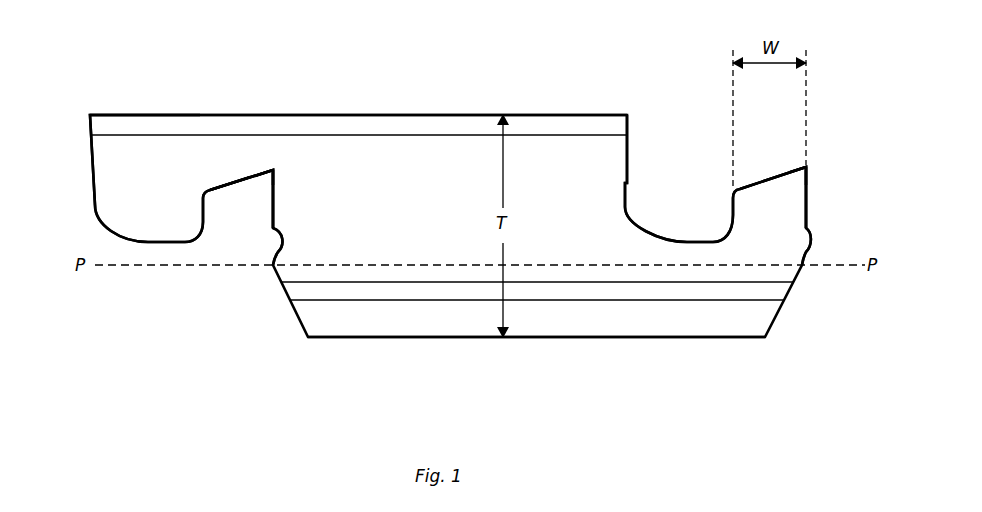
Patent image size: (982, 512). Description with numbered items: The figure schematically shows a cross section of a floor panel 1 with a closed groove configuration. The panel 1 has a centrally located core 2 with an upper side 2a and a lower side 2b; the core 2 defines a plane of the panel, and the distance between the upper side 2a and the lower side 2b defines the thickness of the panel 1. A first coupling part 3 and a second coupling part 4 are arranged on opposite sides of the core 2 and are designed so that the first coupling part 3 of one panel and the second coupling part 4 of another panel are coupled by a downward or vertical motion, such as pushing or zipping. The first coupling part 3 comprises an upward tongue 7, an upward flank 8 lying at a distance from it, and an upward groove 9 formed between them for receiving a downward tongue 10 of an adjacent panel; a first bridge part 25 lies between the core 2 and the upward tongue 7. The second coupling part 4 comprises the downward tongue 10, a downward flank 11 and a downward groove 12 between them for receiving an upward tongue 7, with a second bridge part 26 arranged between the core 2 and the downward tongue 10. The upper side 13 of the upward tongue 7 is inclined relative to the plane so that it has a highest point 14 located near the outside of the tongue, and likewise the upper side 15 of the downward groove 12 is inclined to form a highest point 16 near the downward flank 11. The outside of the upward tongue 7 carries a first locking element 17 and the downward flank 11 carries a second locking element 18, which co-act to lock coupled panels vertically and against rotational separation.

The floor panel 1 is at (450, 98).
The core 2 is at (358, 179).
The upper side 2a is at (156, 115).
The lower side 2b is at (622, 337).
The first coupling part 3 is at (820, 148).
The second coupling part 4 is at (82, 102).
The upward tongue 7 is at (790, 200).
The upward flank 8 is at (627, 160).
The upward groove 9 is at (685, 195).
The downward tongue 10 is at (150, 215).
The downward flank 11 is at (275, 205).
The downward groove 12 is at (236, 237).
The upper side of the upward tongue 13 is at (775, 180).
The highest point of the upward tongue 14 is at (808, 170).
The upper side of the downward groove 15 is at (232, 178).
The highest point of the downward groove 16 is at (275, 170).
The first locking element 17 is at (812, 240).
The second locking element 18 is at (283, 242).
The first bridge part 25 is at (696, 257).
The second bridge part 26 is at (242, 162).